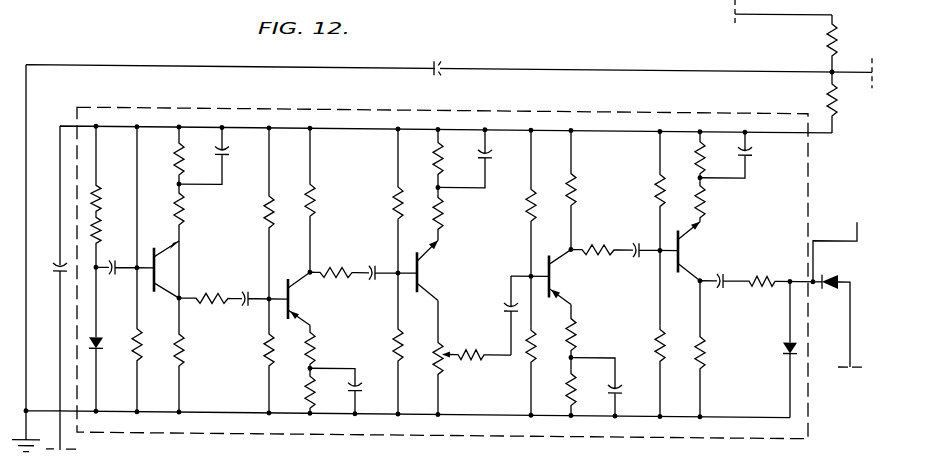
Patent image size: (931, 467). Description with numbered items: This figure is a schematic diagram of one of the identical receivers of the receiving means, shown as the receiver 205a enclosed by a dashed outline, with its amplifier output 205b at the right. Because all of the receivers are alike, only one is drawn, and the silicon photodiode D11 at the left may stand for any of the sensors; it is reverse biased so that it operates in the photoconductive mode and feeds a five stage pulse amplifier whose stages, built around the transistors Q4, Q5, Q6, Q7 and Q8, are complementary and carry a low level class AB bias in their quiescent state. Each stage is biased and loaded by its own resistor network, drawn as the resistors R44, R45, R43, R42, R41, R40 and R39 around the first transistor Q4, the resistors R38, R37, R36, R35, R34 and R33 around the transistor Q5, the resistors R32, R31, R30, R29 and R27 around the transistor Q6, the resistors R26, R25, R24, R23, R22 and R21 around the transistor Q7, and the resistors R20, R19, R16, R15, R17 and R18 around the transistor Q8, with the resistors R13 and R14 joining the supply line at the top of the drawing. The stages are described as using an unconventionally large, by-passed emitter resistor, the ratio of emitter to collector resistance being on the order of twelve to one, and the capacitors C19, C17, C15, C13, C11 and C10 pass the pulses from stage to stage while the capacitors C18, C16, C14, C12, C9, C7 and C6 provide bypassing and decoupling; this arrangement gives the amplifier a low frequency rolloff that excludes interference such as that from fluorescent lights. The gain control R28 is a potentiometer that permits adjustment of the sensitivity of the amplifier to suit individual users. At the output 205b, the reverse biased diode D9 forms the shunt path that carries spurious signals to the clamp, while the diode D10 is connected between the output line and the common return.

The receiver 205a is at (500, 108).
The amplifier output 205b is at (828, 233).
The capacitor C6 is at (441, 60).
The capacitor C7 is at (54, 262).
The capacitor C9 is at (753, 155).
The capacitor C10 is at (721, 267).
The capacitor C11 is at (636, 245).
The capacitor C12 is at (619, 394).
The capacitor C13 is at (502, 300).
The capacitor C14 is at (492, 158).
The capacitor C15 is at (368, 266).
The capacitor C16 is at (347, 391).
The capacitor C17 is at (247, 301).
The capacitor C18 is at (216, 159).
The capacitor C19 is at (113, 282).
The reverse biased diode D9 is at (833, 269).
The diode D10 is at (782, 350).
The silicon photodiode D11 is at (89, 343).
The transistor Q4 is at (172, 269).
The transistor Q5 is at (295, 308).
The transistor Q6 is at (426, 280).
The transistor Q7 is at (562, 285).
The transistor Q8 is at (693, 251).
The resistor R13 is at (826, 35).
The resistor R14 is at (824, 94).
The resistor R15 is at (705, 157).
The resistor R16 is at (707, 205).
The resistor R17 is at (705, 344).
The resistor R18 is at (752, 273).
The resistor R19 is at (655, 334).
The resistor R20 is at (655, 189).
The resistor R21 is at (603, 252).
The resistor R22 is at (576, 399).
The resistor R23 is at (576, 335).
The resistor R24 is at (578, 181).
The resistor R25 is at (525, 208).
The resistor R26 is at (526, 361).
The resistor R27 is at (462, 348).
The gain control R28 is at (430, 375).
The resistor R29 is at (445, 238).
The resistor R30 is at (451, 162).
The resistor R31 is at (391, 342).
The resistor R32 is at (390, 197).
The resistor R33 is at (339, 289).
The resistor R34 is at (312, 398).
The resistor R35 is at (314, 346).
The resistor R36 is at (315, 196).
The resistor R37 is at (266, 364).
The resistor R38 is at (267, 224).
The resistor R39 is at (213, 293).
The resistor R40 is at (185, 354).
The resistor R41 is at (184, 206).
The resistor R42 is at (183, 175).
The resistor R43 is at (132, 355).
The resistor R44 is at (103, 188).
The resistor R45 is at (109, 275).